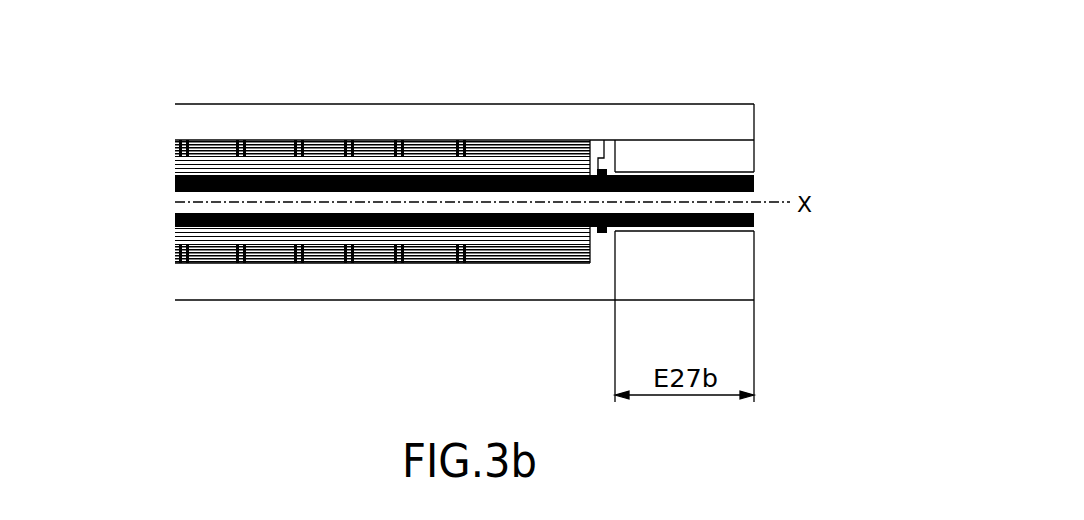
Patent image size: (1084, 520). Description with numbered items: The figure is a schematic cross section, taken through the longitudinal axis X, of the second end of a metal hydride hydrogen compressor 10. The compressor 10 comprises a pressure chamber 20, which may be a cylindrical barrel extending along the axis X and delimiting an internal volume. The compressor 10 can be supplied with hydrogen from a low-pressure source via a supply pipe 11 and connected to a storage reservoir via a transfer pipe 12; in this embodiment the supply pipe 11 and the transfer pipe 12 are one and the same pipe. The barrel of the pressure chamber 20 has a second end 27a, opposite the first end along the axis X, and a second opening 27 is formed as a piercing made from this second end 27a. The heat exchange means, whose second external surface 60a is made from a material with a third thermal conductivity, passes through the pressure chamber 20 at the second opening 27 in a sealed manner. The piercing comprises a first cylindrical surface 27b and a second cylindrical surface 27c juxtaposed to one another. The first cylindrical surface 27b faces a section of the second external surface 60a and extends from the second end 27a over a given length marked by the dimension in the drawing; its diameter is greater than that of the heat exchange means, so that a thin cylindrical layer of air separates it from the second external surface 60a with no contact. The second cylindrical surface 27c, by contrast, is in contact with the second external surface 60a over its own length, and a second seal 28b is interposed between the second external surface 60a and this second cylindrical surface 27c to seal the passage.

The metal hydride hydrogen compressor 10 is at (152, 120).
The pressure chamber 20 is at (357, 127).
The supply pipe 11 is at (718, 140).
The transfer pipe 12 is at (688, 140).
The second opening 27 is at (935, 207).
The second end 27a is at (755, 258).
The first cylindrical surface 27b is at (670, 172).
The second cylindrical surface 27c is at (608, 169).
The second seal 28b is at (604, 233).
The second external surface 60a is at (744, 173).